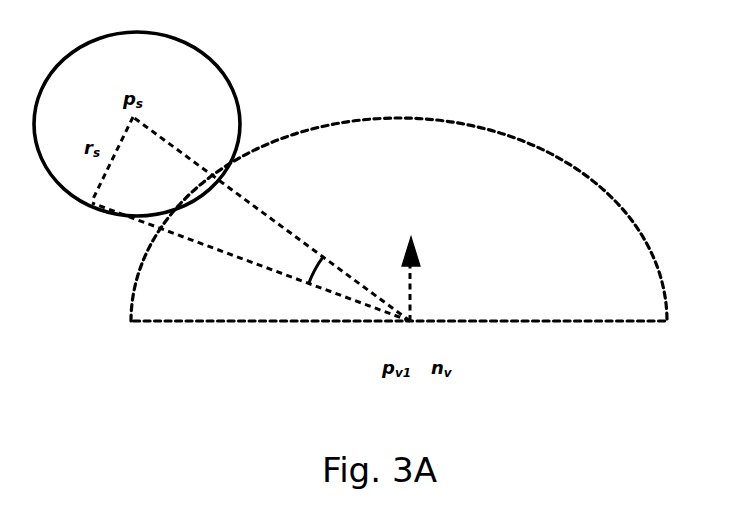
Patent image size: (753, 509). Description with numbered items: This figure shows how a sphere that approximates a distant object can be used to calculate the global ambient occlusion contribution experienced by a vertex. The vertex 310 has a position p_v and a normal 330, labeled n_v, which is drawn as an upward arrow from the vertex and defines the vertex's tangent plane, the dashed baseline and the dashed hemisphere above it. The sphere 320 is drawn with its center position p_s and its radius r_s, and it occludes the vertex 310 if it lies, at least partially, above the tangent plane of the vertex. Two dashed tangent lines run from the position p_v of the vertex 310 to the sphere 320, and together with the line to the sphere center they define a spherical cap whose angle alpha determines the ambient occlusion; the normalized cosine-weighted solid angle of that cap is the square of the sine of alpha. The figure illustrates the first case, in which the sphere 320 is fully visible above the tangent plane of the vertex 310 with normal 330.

The vertex 310 is at (260, 236).
The sphere 320 is at (137, 112).
The normal 330 is at (432, 275).